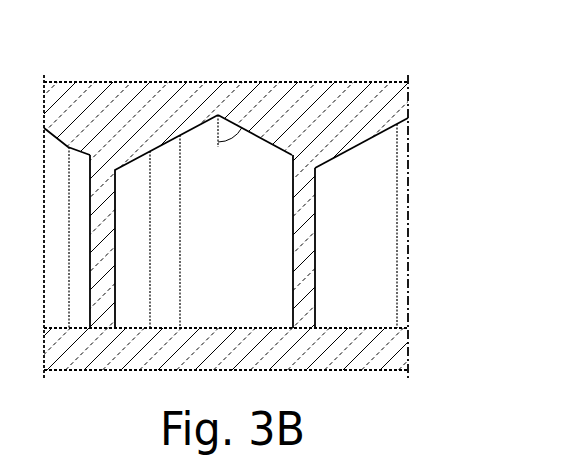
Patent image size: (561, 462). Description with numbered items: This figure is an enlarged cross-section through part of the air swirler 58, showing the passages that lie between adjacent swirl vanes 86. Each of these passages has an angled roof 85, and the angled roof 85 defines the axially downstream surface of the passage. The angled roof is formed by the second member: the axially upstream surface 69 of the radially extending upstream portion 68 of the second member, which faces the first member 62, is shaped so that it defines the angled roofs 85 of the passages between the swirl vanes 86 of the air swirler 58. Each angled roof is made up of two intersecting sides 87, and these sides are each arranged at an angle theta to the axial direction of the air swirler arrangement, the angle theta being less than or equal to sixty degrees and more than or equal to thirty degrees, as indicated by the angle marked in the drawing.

The air swirler 58 is at (430, 195).
The first member 62 is at (377, 347).
The radially extending upstream portion 68 is at (382, 104).
The axially upstream surface 69 is at (372, 138).
The angled roof 85 is at (265, 136).
The swirl vanes 86 is at (102, 273).
The intersecting sides 87 is at (194, 146).